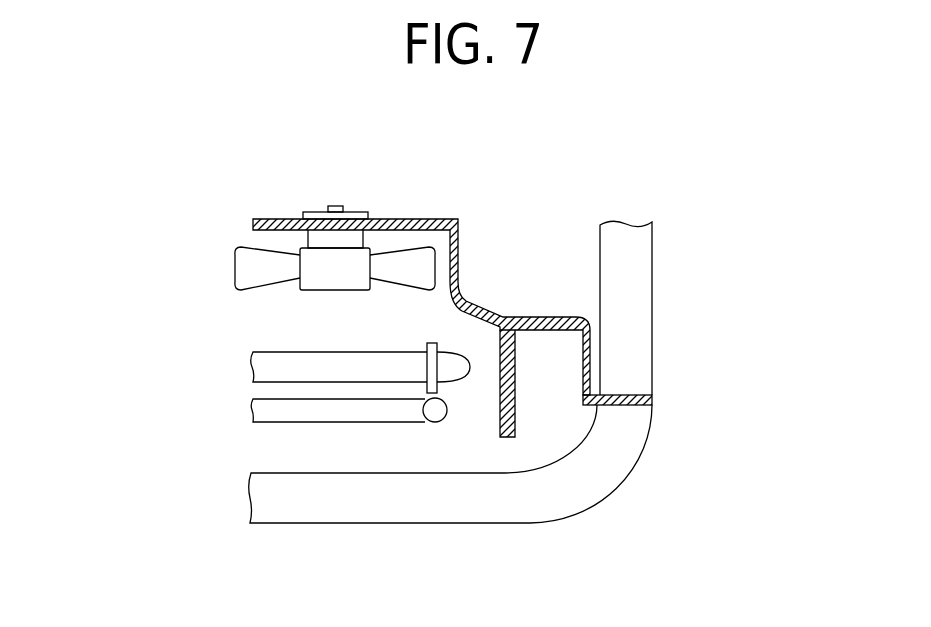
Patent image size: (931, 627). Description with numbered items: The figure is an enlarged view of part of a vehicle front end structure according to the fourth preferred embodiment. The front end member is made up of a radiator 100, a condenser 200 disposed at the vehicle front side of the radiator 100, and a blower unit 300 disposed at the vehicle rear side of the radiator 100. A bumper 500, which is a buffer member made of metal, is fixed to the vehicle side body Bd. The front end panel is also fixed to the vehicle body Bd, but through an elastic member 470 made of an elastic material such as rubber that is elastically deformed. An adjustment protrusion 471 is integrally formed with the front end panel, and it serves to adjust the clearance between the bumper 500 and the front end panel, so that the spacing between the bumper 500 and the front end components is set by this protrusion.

The radiator 100 is at (330, 365).
The condenser 200 is at (357, 412).
The blower unit 300 is at (348, 226).
The elastic member 470 is at (552, 317).
The adjustment protrusion 471 is at (513, 412).
The bumper 500 is at (460, 515).
The vehicle side body Bd is at (638, 298).